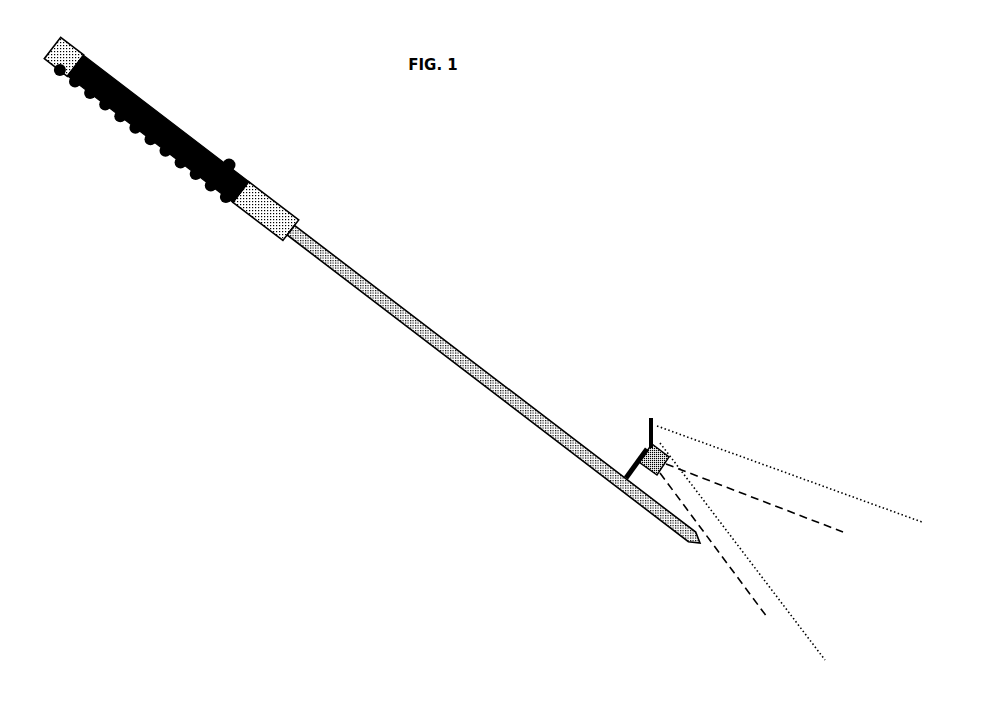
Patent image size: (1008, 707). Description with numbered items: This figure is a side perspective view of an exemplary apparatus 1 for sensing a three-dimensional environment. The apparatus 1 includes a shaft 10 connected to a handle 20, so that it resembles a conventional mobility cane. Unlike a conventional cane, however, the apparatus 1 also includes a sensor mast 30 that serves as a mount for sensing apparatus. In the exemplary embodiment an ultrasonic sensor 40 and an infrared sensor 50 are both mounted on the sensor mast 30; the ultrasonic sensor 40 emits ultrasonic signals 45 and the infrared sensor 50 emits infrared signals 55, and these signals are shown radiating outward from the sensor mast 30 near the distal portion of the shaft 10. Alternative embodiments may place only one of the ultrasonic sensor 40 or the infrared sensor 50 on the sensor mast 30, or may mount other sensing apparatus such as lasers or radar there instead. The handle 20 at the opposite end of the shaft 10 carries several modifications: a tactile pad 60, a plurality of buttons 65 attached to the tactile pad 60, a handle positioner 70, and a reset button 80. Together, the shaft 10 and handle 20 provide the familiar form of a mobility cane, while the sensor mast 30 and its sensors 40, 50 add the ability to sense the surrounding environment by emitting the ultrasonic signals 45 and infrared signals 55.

The apparatus 1 is at (268, 383).
The shaft 10 is at (350, 265).
The handle 20 is at (280, 207).
The sensor mast 30 is at (627, 473).
The ultrasonic sensor 40 is at (656, 421).
The ultrasonic signals 45 is at (743, 457).
The infrared sensor 50 is at (668, 447).
The infrared signals 55 is at (795, 513).
The tactile pad 60 is at (193, 225).
The buttons 65 is at (217, 199).
The handle positioner 70 is at (56, 78).
The reset button 80 is at (232, 162).